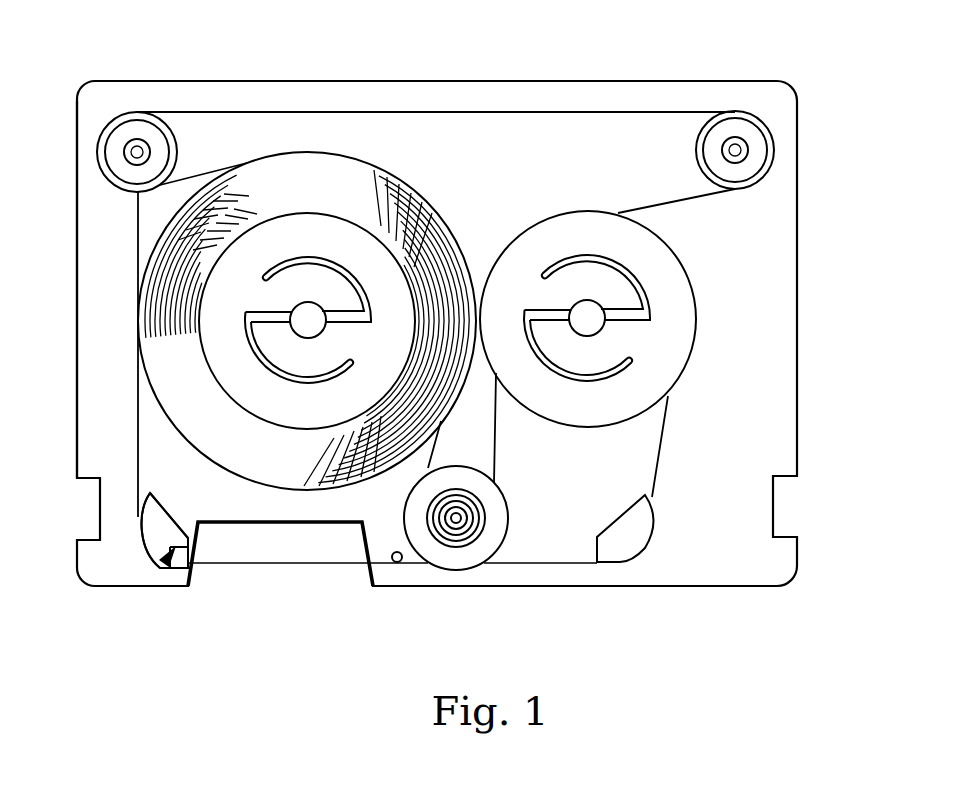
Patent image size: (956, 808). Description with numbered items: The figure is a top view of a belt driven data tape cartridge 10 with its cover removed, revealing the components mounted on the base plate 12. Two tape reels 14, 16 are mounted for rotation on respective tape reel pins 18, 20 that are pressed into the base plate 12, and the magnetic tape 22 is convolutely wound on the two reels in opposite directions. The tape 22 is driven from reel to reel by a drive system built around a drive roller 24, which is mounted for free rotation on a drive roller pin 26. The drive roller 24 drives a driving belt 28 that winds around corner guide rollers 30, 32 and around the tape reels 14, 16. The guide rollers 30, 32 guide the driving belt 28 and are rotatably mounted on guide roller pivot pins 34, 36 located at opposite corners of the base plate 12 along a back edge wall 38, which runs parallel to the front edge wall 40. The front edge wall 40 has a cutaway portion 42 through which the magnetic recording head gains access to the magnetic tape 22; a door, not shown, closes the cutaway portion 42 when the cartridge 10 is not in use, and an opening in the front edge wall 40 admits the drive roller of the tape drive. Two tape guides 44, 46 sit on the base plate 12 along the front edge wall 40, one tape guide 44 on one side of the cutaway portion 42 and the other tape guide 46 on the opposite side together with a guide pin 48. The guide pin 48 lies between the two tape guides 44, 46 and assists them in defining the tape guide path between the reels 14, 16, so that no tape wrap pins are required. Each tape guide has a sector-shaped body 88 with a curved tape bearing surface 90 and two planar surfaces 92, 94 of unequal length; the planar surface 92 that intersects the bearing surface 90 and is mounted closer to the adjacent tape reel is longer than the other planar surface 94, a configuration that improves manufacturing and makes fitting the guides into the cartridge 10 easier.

The cartridge 10 is at (64, 153).
The base plate 12 is at (97, 309).
The tape reel 14 is at (313, 228).
The tape reel 16 is at (558, 223).
The tape reel pin 18 is at (312, 318).
The tape reel pin 20 is at (595, 312).
The magnetic tape 22 is at (665, 440).
The drive roller 24 is at (493, 543).
The drive roller pin 26 is at (456, 520).
The driving belt 28 is at (615, 111).
The corner guide roller 30 is at (152, 137).
The corner guide roller 32 is at (737, 128).
The guide roller pivot pin 34 is at (137, 150).
The guide roller pivot pin 36 is at (737, 150).
The back edge wall 38 is at (405, 80).
The front edge wall 40 is at (592, 586).
The cutaway portion 42 is at (368, 572).
The tape guide 44 is at (165, 562).
The tape guide 46 is at (630, 548).
The guide pin 48 is at (397, 562).
The sector-shaped body 88 is at (153, 520).
The curved tape bearing surface 90 is at (143, 553).
The planar surface 92 is at (167, 508).
The planar surface 94 is at (193, 548).